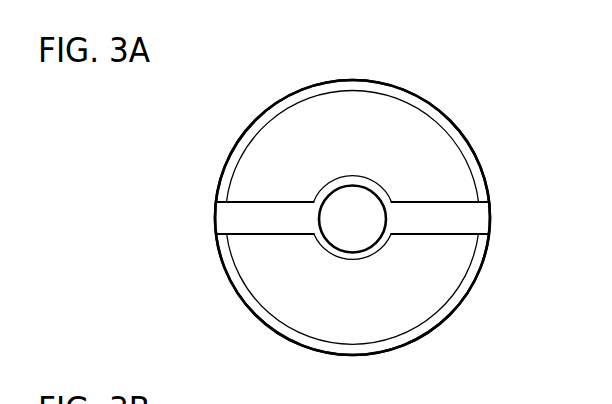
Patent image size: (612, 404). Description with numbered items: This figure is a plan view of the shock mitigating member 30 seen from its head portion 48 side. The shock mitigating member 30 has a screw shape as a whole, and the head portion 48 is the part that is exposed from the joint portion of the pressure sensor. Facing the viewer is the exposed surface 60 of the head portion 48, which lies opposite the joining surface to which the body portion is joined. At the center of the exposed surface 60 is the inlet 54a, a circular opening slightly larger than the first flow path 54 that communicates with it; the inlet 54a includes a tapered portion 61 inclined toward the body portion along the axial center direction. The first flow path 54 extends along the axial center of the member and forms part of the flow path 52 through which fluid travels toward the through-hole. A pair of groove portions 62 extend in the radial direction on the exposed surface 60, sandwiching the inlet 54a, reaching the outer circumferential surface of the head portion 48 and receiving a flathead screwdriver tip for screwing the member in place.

The shock mitigating member 30 is at (212, 125).
The head portion 48 is at (283, 100).
The exposed surface 60 is at (279, 296).
The groove portions 62 is at (230, 219).
The inlet 54a is at (348, 180).
The tapered portion 61 is at (366, 191).
The first flow path 54 is at (353, 233).
The flow path 52 is at (360, 246).